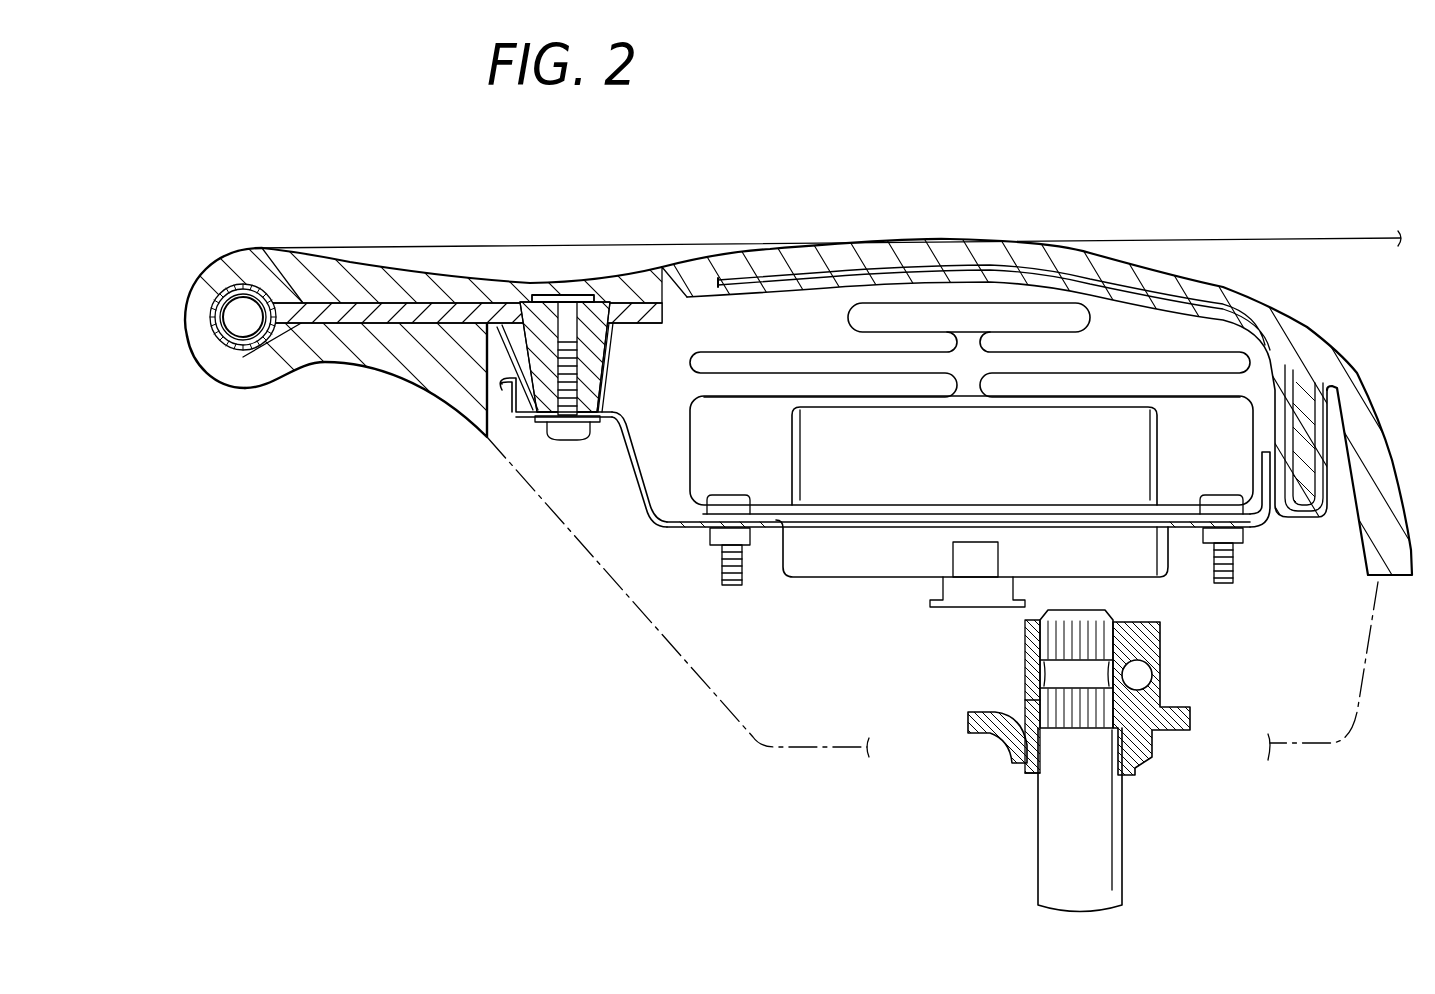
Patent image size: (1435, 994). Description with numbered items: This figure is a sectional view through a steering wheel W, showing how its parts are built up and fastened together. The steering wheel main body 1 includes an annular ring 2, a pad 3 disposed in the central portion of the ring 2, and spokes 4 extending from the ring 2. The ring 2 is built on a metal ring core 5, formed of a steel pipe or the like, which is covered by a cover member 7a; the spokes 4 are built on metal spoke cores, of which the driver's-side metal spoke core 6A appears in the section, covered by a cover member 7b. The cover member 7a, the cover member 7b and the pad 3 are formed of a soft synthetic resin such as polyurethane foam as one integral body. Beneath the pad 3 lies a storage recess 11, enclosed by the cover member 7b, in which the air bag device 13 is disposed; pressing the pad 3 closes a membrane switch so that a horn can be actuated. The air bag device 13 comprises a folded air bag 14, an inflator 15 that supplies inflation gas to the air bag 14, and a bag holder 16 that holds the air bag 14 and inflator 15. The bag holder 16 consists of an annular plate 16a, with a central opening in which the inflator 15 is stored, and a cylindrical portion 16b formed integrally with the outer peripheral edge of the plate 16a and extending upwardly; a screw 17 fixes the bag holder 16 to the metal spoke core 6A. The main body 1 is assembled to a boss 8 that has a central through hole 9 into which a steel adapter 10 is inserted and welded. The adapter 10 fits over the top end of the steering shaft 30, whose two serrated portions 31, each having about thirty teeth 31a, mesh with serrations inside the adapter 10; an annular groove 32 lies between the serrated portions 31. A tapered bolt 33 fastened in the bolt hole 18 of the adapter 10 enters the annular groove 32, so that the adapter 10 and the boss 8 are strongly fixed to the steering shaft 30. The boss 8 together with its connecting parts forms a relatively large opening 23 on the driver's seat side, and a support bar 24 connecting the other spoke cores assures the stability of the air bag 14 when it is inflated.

The steering wheel main body 1 is at (577, 245).
The annular ring 2 is at (215, 260).
The pad 3 is at (1010, 250).
The spoke 4 is at (393, 365).
The metal ring core 5 is at (195, 283).
The metal spoke core 6A is at (323, 327).
The cover member 7a is at (207, 367).
The cover member 7b is at (453, 387).
The boss 8 is at (990, 737).
The through hole 9 is at (1030, 772).
The adapter 10 is at (1140, 633).
The storage recess 11 is at (815, 328).
The air bag device 13 is at (821, 588).
The air bag 14 is at (723, 347).
The inflator 15 is at (793, 448).
The bag holder 16 is at (633, 483).
The annular plate 16a is at (677, 530).
The cylindrical portion 16b is at (633, 440).
The screw 17 is at (560, 433).
The bolt hole 18 is at (1147, 658).
The opening 23 is at (616, 597).
The support bar 24 is at (1303, 517).
The steering shaft 30 is at (1123, 868).
The serrated portion 31 is at (1045, 648).
The teeth 31a is at (1043, 698).
The annular groove 32 is at (1090, 677).
The tapered bolt 33 is at (1160, 680).
The steering wheel W is at (851, 239).